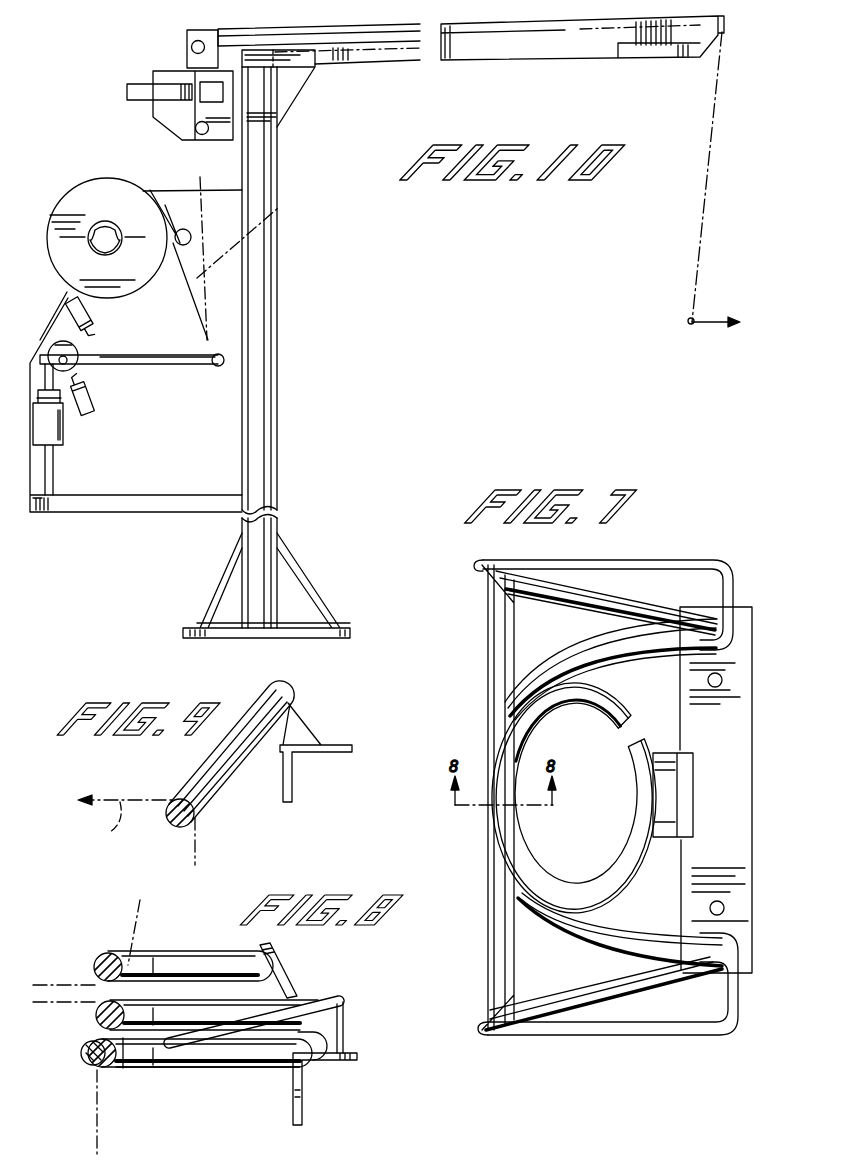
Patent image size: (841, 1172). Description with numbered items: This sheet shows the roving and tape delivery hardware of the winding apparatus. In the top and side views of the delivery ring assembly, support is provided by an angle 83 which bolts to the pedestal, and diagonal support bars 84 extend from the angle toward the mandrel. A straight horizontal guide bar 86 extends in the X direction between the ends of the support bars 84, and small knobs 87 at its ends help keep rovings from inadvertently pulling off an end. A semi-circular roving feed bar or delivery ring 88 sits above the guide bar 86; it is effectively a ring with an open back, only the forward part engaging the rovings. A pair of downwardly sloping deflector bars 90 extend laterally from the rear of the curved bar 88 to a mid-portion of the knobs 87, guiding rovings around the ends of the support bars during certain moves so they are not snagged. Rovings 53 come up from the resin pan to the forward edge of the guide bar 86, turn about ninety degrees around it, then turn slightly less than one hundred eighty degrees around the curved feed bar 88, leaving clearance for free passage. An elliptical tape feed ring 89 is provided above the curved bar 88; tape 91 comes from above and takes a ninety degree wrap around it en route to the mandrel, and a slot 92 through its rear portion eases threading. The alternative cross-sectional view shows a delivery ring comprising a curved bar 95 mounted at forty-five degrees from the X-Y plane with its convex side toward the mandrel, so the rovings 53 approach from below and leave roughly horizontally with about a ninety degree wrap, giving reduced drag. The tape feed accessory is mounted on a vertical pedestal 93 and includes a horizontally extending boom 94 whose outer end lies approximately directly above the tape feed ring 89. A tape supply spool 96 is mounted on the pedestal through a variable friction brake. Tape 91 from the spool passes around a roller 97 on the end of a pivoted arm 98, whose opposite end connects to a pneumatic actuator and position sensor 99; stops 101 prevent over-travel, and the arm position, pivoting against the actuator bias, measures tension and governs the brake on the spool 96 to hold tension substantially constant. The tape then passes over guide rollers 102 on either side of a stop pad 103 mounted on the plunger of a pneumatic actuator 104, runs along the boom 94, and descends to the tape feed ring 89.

In FIG. 9, the rovings 53 is at (100, 828).
In FIG. 8, the rovings 53 is at (78, 1008).
In FIG. 7, the angle 83 is at (742, 800).
In FIG. 8, the angle 83 is at (290, 1108).
In FIG. 7, the diagonal support bars 84 is at (580, 592).
In FIG. 8, the diagonal support bars 84 is at (208, 1068).
In FIG. 7, the straight horizontal guide bar 86 is at (492, 945).
In FIG. 8, the straight horizontal guide bar 86 is at (125, 1070).
In FIG. 7, the small knobs 87 is at (480, 563).
In FIG. 8, the small knobs 87 is at (92, 1068).
In FIG. 7, the semi-circular roving feed bar or delivery ring 88 is at (560, 655).
In FIG. 8, the semi-circular roving feed bar or delivery ring 88 is at (96, 1025).
In FIG. 10, the elliptical tape feed ring 89 is at (686, 318).
In FIG. 7, the elliptical tape feed ring 89 is at (517, 862).
In FIG. 8, the elliptical tape feed ring 89 is at (190, 951).
In FIG. 7, the downwardly sloping deflector bars 90 is at (690, 564).
In FIG. 8, the downwardly sloping deflector bars 90 is at (325, 1000).
In FIG. 10, the tape 91 is at (207, 223).
In FIG. 8, the tape 91 is at (130, 920).
In FIG. 7, the slot 92 is at (637, 742).
In FIG. 10, the vertical pedestal 93 is at (280, 520).
In FIG. 10, the horizontally extending boom 94 is at (503, 53).
In FIG. 9, the curved bar 95 is at (225, 785).
In FIG. 10, the tape supply spool 96 is at (88, 182).
In FIG. 10, the roller 97 is at (224, 362).
In FIG. 10, the pivoted arm 98 is at (165, 365).
In FIG. 10, the pneumatic actuator and position sensor 99 is at (66, 432).
In FIG. 10, the stops 101 is at (92, 330).
In FIG. 10, the guide rollers 102 is at (192, 48).
In FIG. 10, the stop pad 103 is at (153, 114).
In FIG. 10, the pneumatic actuator 104 is at (128, 87).